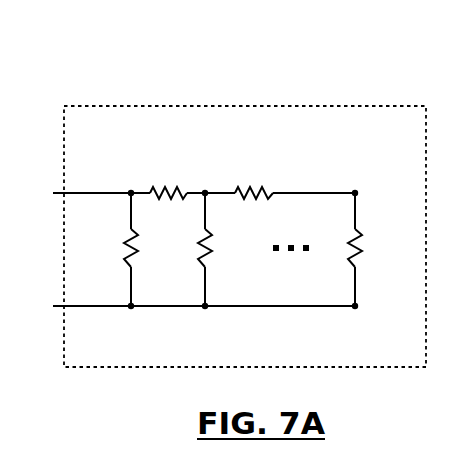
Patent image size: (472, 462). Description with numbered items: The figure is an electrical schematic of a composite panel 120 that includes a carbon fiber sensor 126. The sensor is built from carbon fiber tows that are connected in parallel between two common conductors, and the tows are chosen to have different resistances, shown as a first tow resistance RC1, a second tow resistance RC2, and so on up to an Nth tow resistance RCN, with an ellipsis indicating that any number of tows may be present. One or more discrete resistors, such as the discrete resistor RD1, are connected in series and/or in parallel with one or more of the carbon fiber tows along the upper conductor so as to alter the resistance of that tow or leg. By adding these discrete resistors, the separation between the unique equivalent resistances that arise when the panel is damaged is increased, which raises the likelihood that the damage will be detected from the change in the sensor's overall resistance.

The composite panel 120 is at (193, 106).
The carbon fiber sensor 126 is at (278, 157).
The discrete resistor RD1 is at (168, 177).
The carbon fiber tow resistance RC1 is at (153, 248).
The carbon fiber tow resistance RC2 is at (228, 248).
The carbon fiber tow resistance RCN is at (376, 248).